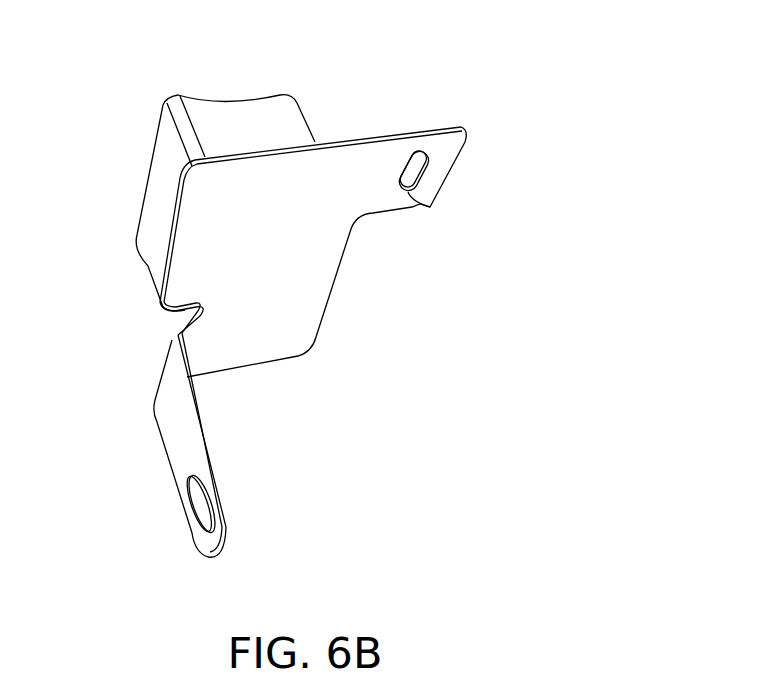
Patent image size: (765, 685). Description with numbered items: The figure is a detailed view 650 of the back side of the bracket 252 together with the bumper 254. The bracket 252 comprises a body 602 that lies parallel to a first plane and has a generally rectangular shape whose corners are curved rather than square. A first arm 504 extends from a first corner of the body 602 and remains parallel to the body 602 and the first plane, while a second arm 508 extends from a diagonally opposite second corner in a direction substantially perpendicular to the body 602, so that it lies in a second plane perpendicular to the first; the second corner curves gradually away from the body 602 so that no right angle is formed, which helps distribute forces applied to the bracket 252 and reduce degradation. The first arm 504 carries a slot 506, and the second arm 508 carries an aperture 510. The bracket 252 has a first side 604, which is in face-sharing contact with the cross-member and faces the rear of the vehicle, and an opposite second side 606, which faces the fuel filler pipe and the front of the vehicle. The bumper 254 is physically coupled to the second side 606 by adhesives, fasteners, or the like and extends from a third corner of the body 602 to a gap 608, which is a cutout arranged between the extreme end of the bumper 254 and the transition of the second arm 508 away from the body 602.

The detailed view 650 is at (566, 55).
The bracket 252 is at (367, 127).
The first arm 504 is at (455, 126).
The slot 506 is at (432, 206).
The bumper 254 is at (222, 137).
The body 602 is at (249, 245).
The first side 604 is at (287, 288).
The second side 606 is at (127, 297).
The gap 608 is at (169, 324).
The second arm 508 is at (222, 483).
The aperture 510 is at (198, 532).